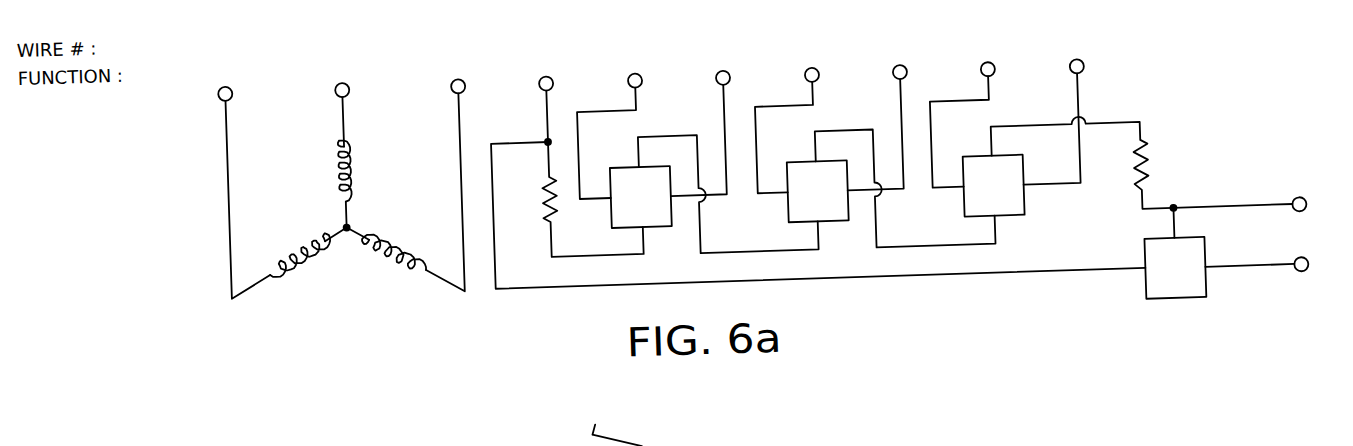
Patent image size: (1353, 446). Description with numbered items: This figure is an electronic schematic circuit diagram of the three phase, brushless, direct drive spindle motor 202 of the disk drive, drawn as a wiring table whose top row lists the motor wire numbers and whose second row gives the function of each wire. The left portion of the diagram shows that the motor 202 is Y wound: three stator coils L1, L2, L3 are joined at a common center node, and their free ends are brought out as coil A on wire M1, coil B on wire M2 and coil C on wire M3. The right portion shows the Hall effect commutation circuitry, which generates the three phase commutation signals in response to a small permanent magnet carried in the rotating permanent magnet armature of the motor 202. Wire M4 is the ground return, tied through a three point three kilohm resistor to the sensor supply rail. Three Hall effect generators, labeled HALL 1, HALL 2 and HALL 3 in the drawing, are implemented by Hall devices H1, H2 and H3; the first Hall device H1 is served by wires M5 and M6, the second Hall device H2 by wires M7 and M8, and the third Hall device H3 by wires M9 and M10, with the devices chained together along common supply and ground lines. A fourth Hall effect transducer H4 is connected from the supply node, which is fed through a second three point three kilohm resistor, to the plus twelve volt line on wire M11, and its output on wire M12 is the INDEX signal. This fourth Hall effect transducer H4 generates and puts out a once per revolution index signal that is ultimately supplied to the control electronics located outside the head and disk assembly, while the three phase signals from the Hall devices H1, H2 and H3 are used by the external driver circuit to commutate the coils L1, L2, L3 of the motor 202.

The brushless spindle motor 202 is at (919, 160).
The Hall sensor 1 is at (696, 136).
The Hall sensor 2 is at (873, 131).
The Hall sensor 3 is at (1109, 109).
The motor wire M1 (coil A) M1 is at (232, 167).
The motor wire M2 (coil B) M2 is at (342, 89).
The motor wire M3 (coil C) M3 is at (456, 160).
The motor wire M4 (ground) M4 is at (546, 83).
The motor wire M5 is at (613, 110).
The motor wire M6 is at (702, 107).
The motor wire M7 is at (790, 104).
The motor wire M8 is at (879, 101).
The motor wire M9 is at (966, 98).
The motor wire M10 is at (1059, 95).
The motor wire M11 (+12V) M11 is at (1285, 200).
The motor wire M12 (index) M12 is at (1278, 259).
The stator coil L1 is at (308, 252).
The stator coil L2 is at (362, 183).
The stator coil L3 is at (386, 248).
The Hall effect device H1 is at (641, 197).
The Hall effect device H2 is at (818, 191).
The Hall effect device H3 is at (994, 186).
The fourth Hall effect transducer H4 is at (1175, 268).